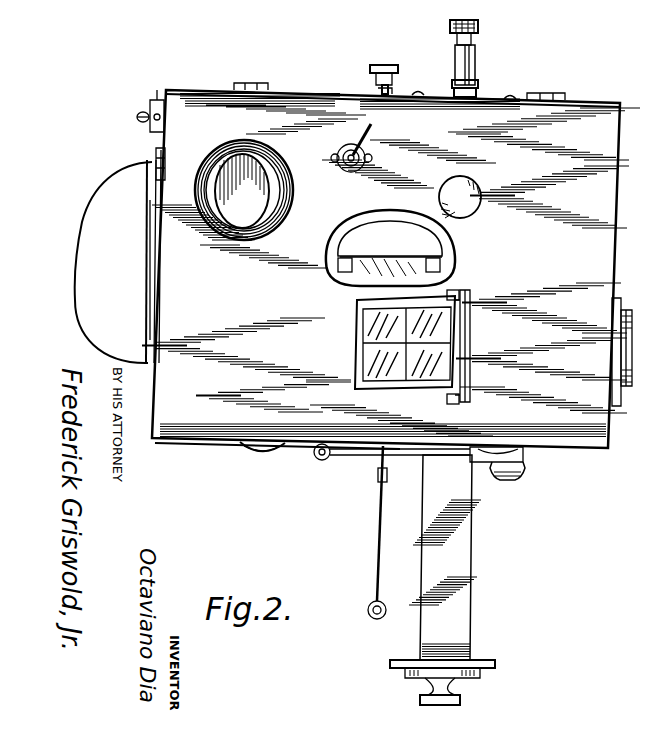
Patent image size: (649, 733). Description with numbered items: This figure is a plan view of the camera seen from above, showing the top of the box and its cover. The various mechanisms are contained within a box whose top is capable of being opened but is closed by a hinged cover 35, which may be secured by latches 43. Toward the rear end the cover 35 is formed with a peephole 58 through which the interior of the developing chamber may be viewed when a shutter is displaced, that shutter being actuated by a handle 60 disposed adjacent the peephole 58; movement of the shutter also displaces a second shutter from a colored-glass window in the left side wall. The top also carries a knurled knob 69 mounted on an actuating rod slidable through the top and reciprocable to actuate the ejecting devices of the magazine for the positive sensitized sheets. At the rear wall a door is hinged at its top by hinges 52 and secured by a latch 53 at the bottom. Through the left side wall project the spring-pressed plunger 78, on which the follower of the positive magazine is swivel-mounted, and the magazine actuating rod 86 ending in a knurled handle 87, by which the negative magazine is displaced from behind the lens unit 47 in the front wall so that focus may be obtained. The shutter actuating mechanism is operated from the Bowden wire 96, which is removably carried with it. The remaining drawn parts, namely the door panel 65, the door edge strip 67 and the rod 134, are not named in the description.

The hinged cover 35 is at (206, 420).
The latches 43 is at (265, 455).
The lens unit 47 is at (635, 384).
The hinges 52 is at (157, 153).
The latch 53 is at (160, 108).
The peephole 58 is at (232, 226).
The handle 60 is at (372, 130).
The door 65 is at (156, 287).
The door edge strip 67 is at (152, 330).
The knurled knob 69 is at (478, 191).
The plunger 78 is at (478, 55).
The magazine actuating rod 86 is at (381, 88).
The knurled handle 87 is at (386, 66).
The Bowden wire 96 is at (355, 458).
The rod 134 is at (378, 556).